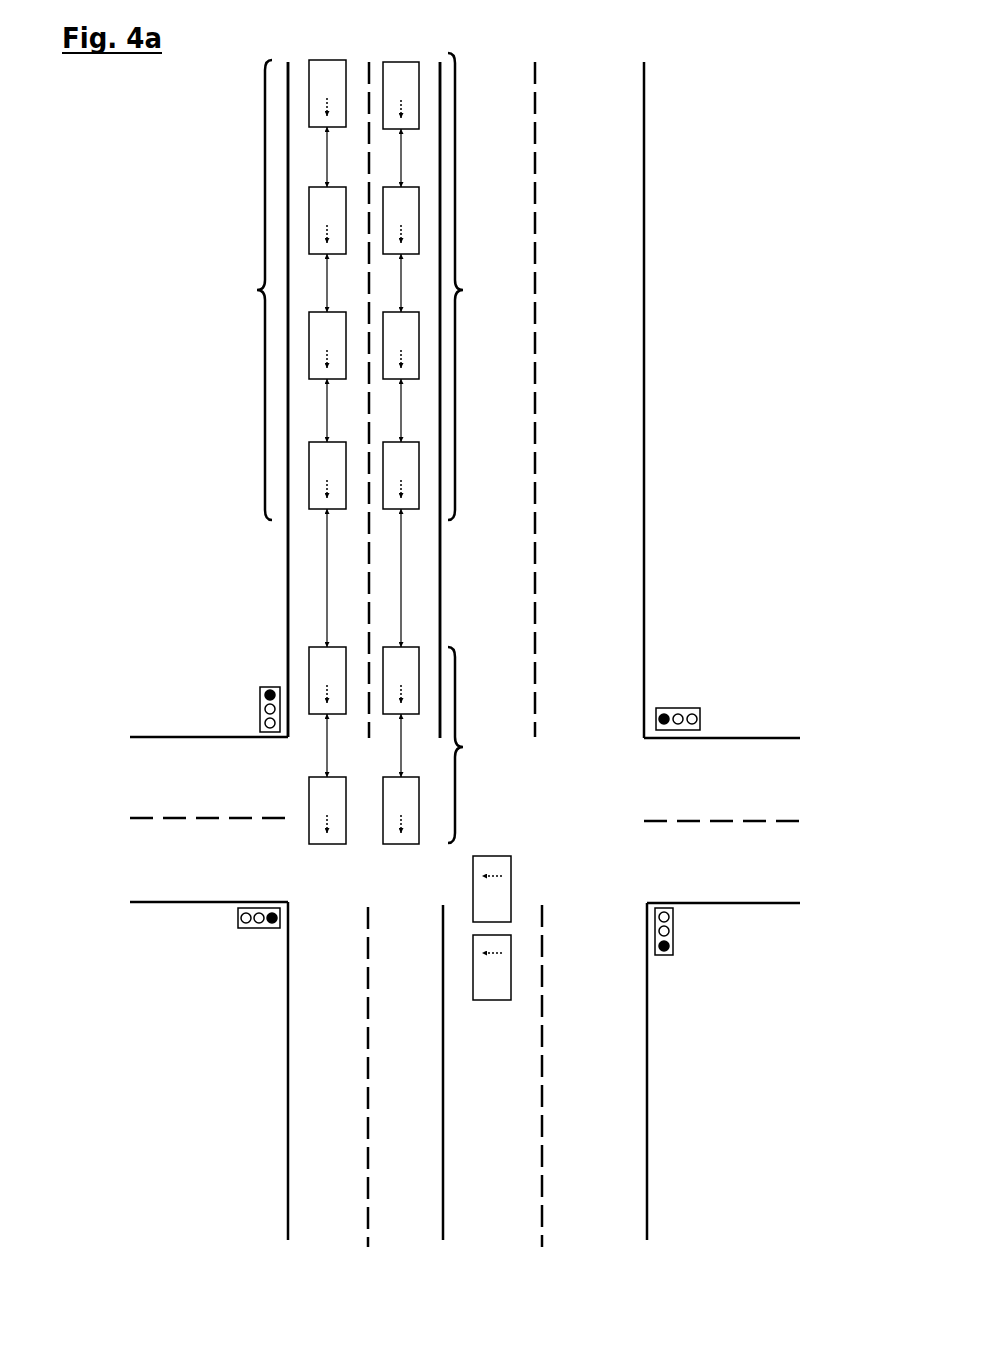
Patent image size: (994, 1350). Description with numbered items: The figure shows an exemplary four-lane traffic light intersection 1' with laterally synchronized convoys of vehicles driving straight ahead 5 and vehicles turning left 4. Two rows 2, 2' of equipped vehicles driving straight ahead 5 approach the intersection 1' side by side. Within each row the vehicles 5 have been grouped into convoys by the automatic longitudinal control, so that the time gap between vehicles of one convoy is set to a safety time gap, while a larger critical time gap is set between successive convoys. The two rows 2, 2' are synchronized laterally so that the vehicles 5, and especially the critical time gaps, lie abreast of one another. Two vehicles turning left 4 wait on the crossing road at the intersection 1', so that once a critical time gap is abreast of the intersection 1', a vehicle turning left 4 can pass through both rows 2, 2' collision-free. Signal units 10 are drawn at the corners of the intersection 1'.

The traffic light intersection 1' is at (471, 654).
The line of vehicles driving straight ahead 2 is at (286, 378).
The line of vehicles driving straight ahead 2' is at (454, 380).
The vehicle turning left 4 is at (492, 928).
The vehicle driving straight ahead 5 is at (365, 452).
The traffic light 10 is at (261, 712).